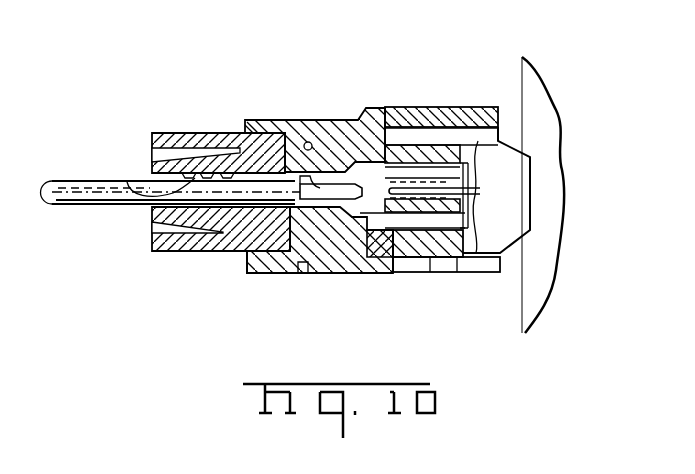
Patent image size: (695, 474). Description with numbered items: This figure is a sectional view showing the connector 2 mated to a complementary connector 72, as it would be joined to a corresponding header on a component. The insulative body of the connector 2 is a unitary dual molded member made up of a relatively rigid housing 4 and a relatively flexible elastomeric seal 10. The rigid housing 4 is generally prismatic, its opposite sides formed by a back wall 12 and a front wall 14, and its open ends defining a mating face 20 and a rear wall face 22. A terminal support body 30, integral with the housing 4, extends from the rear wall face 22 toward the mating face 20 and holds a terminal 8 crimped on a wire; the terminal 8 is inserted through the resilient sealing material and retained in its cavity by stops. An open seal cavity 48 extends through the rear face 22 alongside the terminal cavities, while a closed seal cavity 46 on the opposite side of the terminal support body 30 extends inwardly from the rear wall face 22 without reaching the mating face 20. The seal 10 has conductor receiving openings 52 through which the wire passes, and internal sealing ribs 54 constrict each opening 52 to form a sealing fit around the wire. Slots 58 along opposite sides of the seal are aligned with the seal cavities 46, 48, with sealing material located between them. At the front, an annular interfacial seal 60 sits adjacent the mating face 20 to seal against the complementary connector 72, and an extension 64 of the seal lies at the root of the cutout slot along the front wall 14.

The connector 2 is at (386, 52).
The relatively rigid housing 4 is at (438, 107).
The terminal 8 is at (332, 192).
The relatively flexible seal 10 is at (184, 133).
The back wall 12 is at (384, 108).
The front wall 14 is at (353, 273).
The mating face 20 is at (500, 118).
The rear wall face 22 is at (247, 264).
The terminal support body 30 is at (444, 165).
The closed seal cavity 46 is at (303, 245).
The open seal cavity 48 is at (300, 120).
The conductor receiving openings 52 is at (155, 206).
The sealing ribs 54 is at (150, 185).
The slots 58 is at (160, 160).
The interfacial seal 60 is at (377, 108).
The seal extension 64 is at (388, 274).
The complementary connector 72 is at (503, 188).